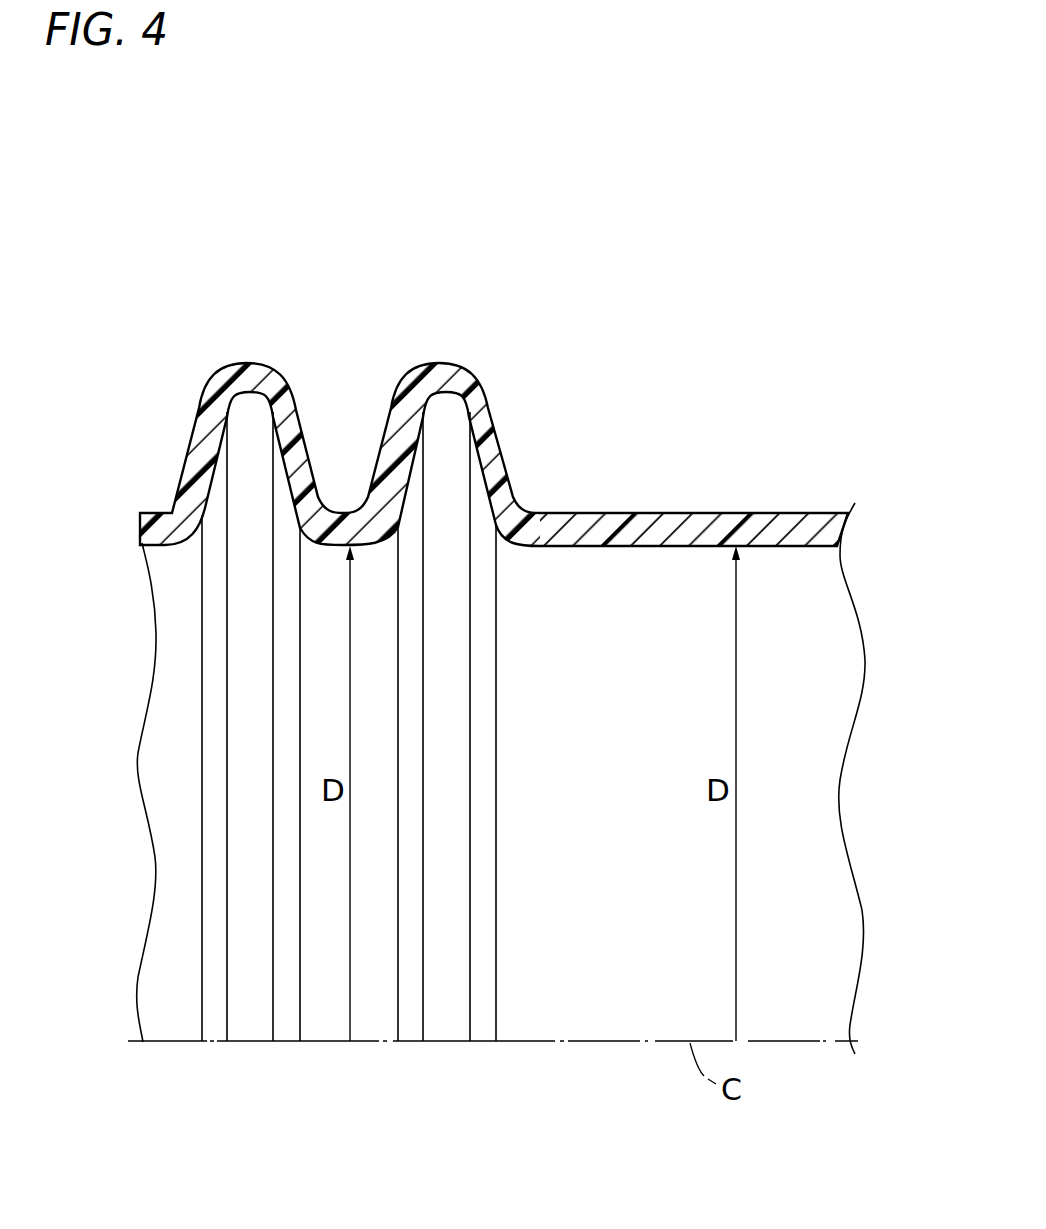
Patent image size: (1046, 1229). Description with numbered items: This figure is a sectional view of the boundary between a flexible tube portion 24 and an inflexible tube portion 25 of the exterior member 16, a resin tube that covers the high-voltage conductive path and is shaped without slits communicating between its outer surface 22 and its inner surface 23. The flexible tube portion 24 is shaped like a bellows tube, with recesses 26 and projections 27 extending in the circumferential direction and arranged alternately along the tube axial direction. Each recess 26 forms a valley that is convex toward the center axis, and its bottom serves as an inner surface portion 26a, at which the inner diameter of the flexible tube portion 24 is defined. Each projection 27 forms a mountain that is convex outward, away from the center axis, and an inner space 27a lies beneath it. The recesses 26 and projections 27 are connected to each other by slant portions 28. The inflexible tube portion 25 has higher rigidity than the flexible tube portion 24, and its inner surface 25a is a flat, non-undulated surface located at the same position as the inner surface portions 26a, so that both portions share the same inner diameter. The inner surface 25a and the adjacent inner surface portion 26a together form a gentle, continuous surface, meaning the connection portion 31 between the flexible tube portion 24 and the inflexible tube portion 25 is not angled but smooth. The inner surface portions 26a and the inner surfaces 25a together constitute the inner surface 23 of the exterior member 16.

The exterior member 16 is at (632, 208).
The outer surface 22 is at (806, 512).
The inner surface 23 is at (793, 548).
The flexible tube portion 24 is at (190, 437).
The inflexible tube portion 25 is at (732, 512).
The inner surface of inflexible tube portion 25a is at (638, 548).
The recess 26 is at (350, 513).
The inner surface portion 26a is at (344, 550).
The projection 27 is at (222, 378).
The inner space of bead 27a is at (470, 418).
The slant portion 28 is at (395, 455).
The connection portion 31 is at (541, 548).